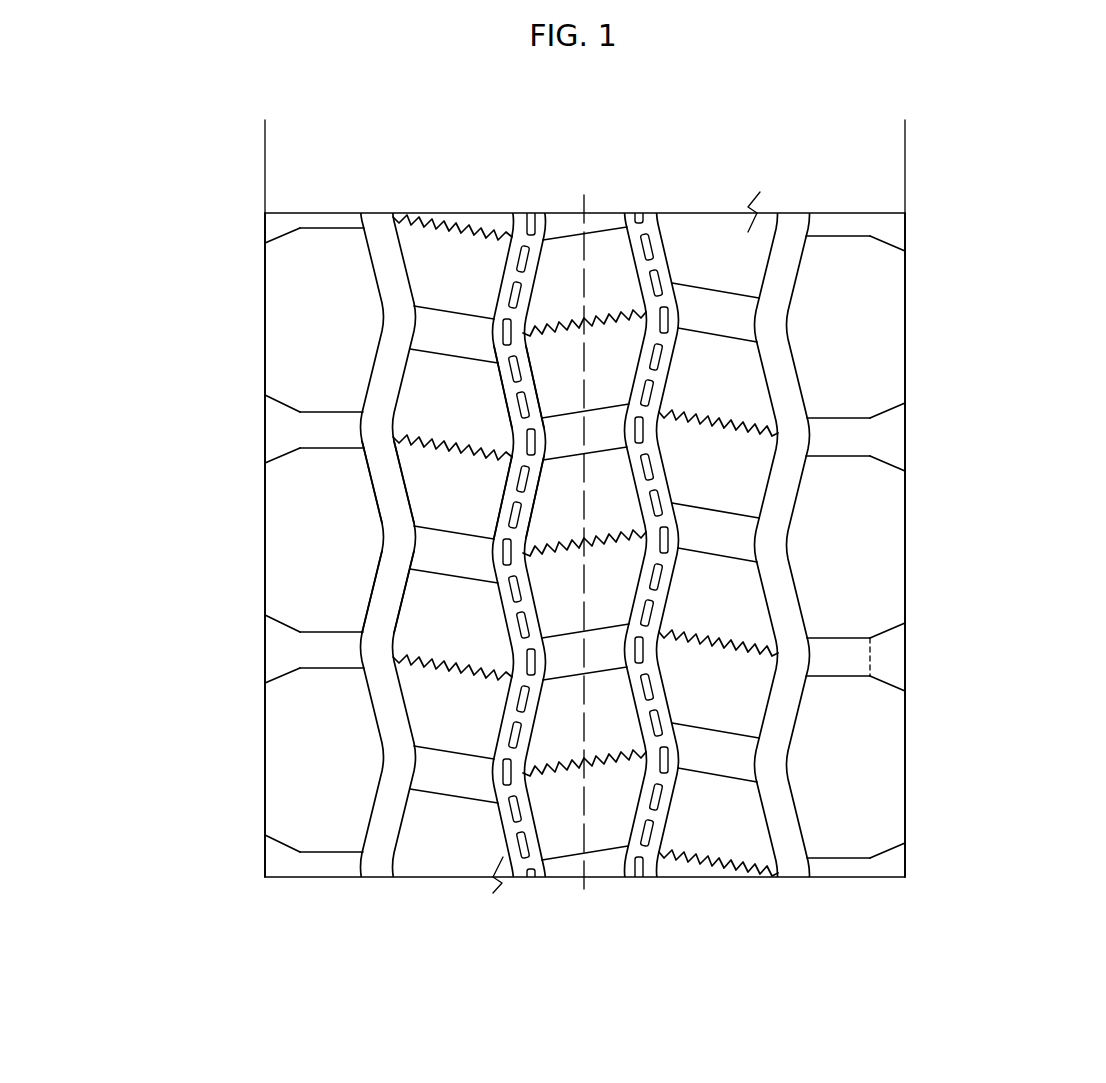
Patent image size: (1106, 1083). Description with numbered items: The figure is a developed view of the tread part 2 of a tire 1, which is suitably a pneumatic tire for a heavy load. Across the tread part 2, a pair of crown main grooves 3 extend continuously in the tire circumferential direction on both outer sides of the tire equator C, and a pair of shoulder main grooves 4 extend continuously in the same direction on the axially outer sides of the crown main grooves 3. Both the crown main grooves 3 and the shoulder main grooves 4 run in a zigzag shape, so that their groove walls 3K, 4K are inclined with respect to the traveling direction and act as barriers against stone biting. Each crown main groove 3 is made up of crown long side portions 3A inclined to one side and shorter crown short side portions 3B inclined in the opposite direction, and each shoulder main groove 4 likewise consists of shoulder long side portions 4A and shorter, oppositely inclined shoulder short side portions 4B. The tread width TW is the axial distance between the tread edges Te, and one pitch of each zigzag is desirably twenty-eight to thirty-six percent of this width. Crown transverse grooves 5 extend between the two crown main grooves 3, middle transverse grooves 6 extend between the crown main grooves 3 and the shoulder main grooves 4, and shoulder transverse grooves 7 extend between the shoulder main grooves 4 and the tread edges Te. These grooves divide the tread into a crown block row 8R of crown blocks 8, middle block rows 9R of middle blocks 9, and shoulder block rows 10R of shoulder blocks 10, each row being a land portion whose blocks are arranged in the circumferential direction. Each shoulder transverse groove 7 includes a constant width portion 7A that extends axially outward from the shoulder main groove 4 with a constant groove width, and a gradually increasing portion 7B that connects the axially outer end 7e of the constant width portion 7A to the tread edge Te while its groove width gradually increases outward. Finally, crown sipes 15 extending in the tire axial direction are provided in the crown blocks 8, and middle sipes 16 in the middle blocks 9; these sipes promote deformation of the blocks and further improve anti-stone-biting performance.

The tire 1 is at (932, 164).
The tread part 2 is at (863, 192).
The crown main groove 3 is at (647, 212).
The groove wall 3K is at (666, 262).
The crown long side portion 3A is at (512, 503).
The crown short side portion 3B is at (510, 393).
The shoulder main groove 4 is at (795, 226).
The groove wall 4K is at (405, 272).
The shoulder long side portion 4A is at (377, 637).
The shoulder short side portion 4B is at (390, 497).
The crown transverse groove 5 is at (602, 669).
The middle transverse groove 6 is at (707, 757).
The shoulder transverse groove 7 is at (352, 650).
The constant width portion 7A is at (840, 660).
The gradually increasing portion 7B is at (888, 665).
The tire axial direction outer end 7e is at (873, 650).
The crown block row 8R is at (551, 822).
The crown block 8 is at (755, 578).
The middle block row 9R is at (729, 720).
The middle block 9 is at (690, 572).
The shoulder block row 10R is at (860, 811).
The shoulder block 10 is at (593, 543).
The crown sipe 15 is at (628, 532).
The middle sipe 16 is at (655, 408).
The tread width TW is at (265, 125).
The tire equator C is at (583, 530).
The tread edge Te is at (905, 282).